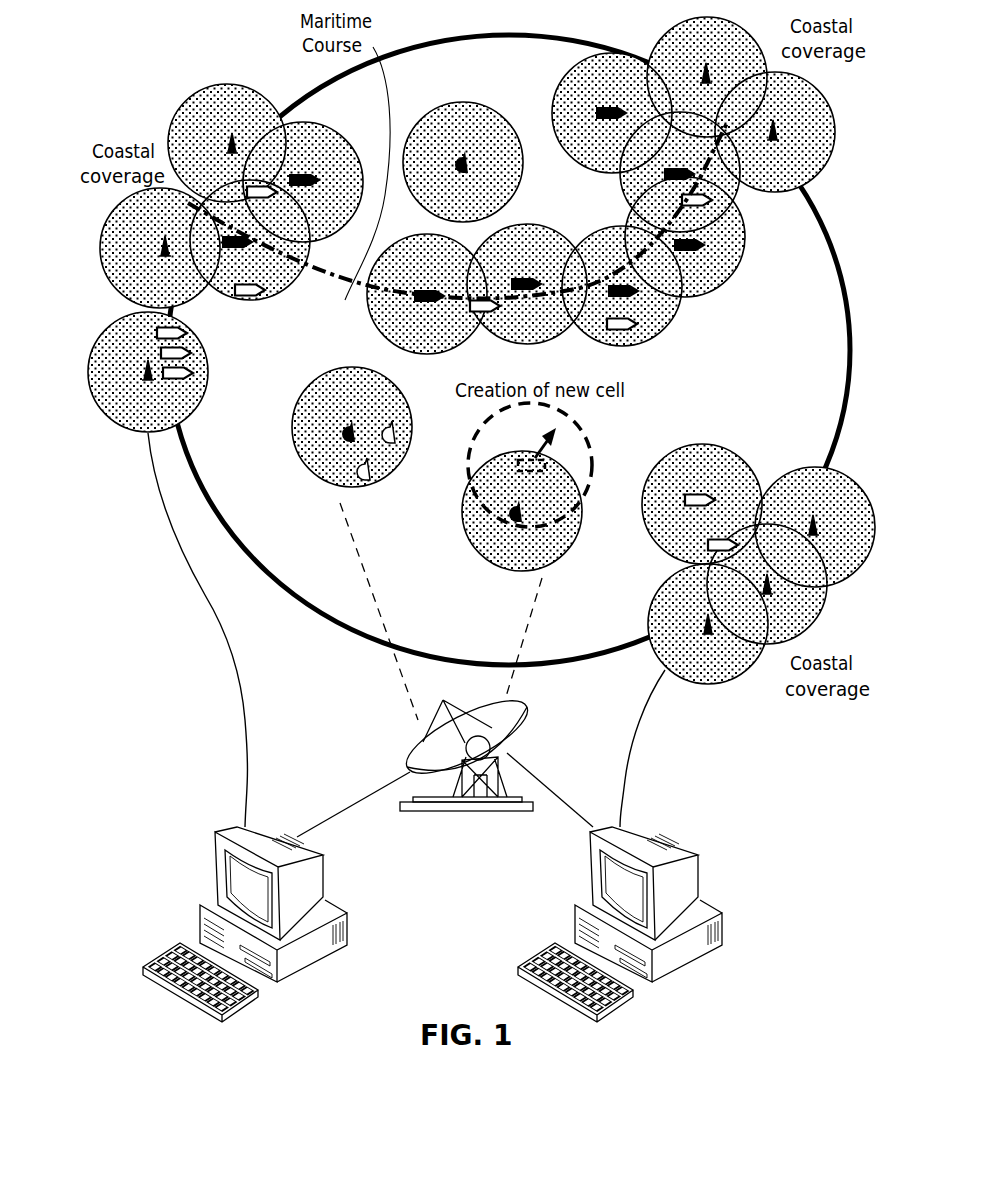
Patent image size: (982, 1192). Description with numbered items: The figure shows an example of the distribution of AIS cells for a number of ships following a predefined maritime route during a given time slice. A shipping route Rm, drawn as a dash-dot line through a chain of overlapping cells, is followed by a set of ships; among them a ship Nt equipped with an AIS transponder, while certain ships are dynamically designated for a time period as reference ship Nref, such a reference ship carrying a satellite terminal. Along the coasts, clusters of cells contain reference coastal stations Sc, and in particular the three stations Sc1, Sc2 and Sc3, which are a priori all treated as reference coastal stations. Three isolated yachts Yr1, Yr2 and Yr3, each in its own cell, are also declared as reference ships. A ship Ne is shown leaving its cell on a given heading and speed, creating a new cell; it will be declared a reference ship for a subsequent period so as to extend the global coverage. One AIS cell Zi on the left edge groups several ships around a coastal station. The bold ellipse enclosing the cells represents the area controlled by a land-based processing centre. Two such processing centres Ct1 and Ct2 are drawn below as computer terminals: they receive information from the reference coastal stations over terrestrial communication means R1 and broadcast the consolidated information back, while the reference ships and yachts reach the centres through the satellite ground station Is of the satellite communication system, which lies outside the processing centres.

The reference coastal station Sc is at (229, 133).
The reference coastal station Sc1 is at (717, 633).
The reference coastal station Sc2 is at (773, 588).
The reference coastal station Sc3 is at (813, 522).
The reference ship Nref is at (315, 174).
The ship equipped with an AIS transponder Nt is at (633, 332).
The ship leaving a cell Ne is at (545, 460).
The yacht Yr1 is at (350, 438).
The yacht Yr2 is at (468, 158).
The yacht Yr3 is at (514, 525).
The AIS cell Zi is at (148, 383).
The shipping route Rm is at (353, 290).
The terrestrial communication means R1 is at (409, 630).
The satellite ground station Is is at (528, 712).
The processing centre Ct1 is at (697, 882).
The processing centre Ct2 is at (322, 882).